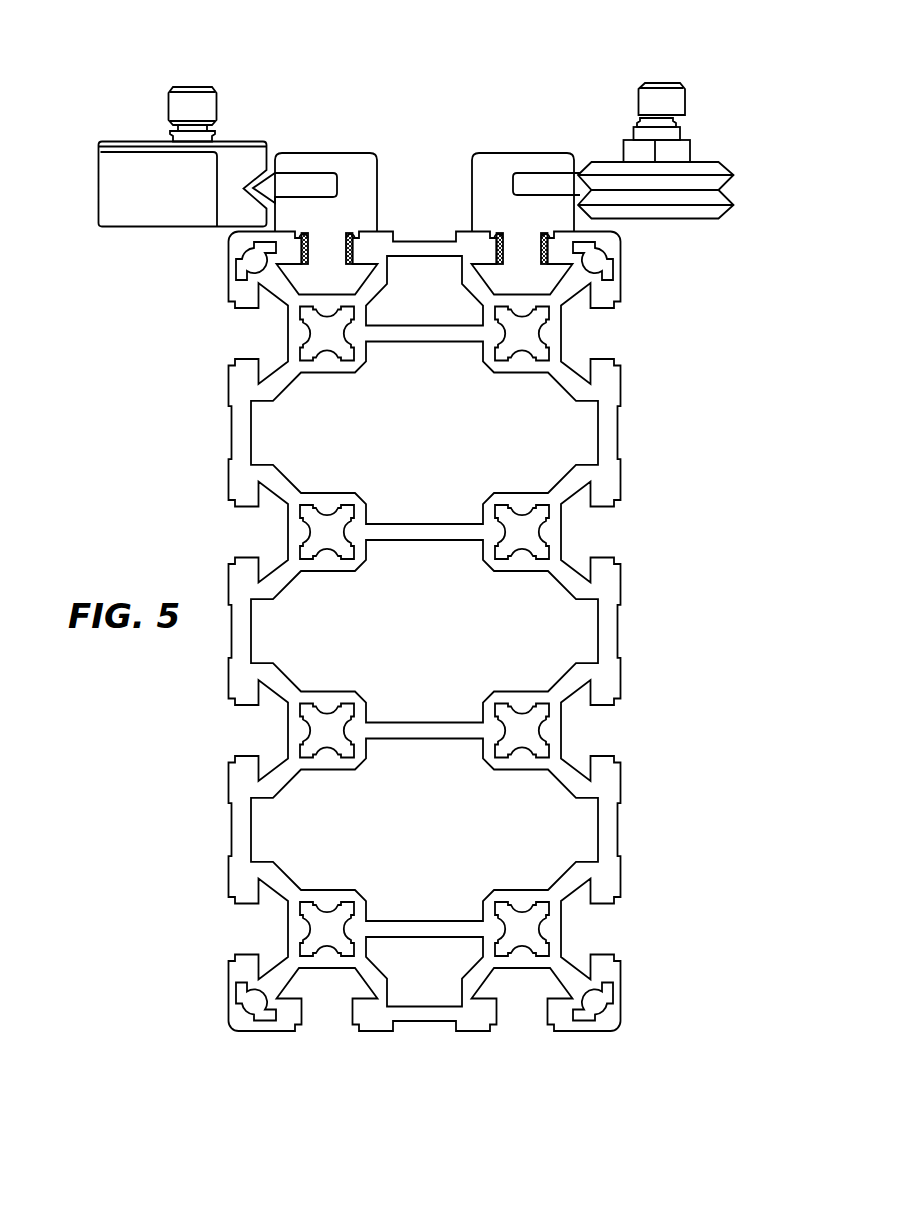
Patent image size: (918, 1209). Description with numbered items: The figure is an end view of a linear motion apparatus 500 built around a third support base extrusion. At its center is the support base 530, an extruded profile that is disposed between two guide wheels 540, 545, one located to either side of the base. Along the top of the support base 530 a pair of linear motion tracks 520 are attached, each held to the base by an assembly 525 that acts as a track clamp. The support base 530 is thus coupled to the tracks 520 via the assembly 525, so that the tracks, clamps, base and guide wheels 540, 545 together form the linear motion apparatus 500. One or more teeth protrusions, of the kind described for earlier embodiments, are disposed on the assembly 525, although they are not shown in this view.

The linear motion apparatus 500 is at (125, 39).
The track 520 is at (270, 187).
The assembly 525 is at (357, 152).
The support base 530 is at (623, 630).
The guide wheel 540 is at (97, 178).
The guide wheel 545 is at (722, 191).